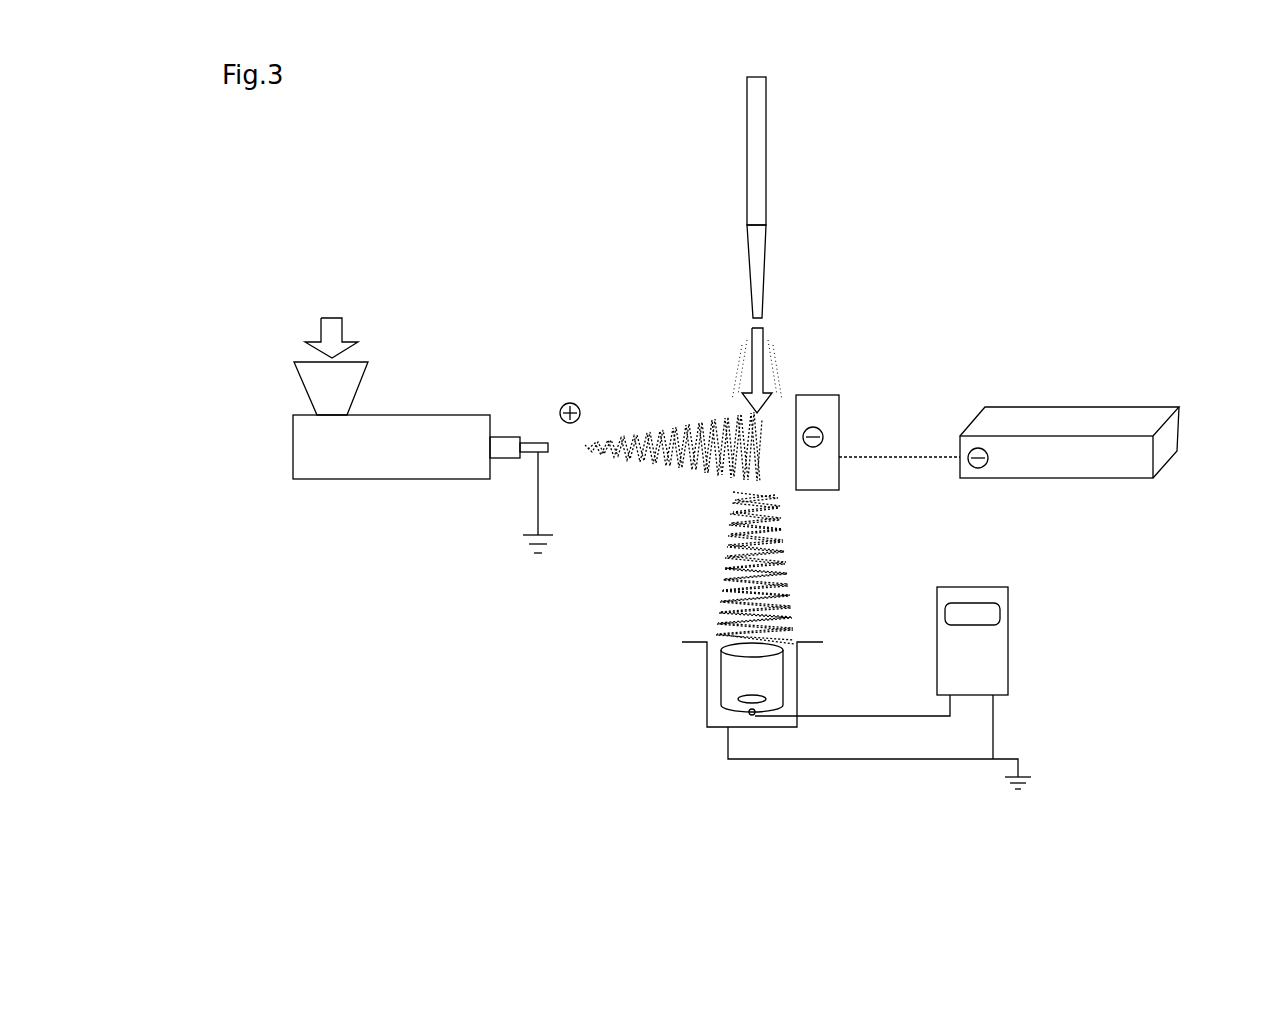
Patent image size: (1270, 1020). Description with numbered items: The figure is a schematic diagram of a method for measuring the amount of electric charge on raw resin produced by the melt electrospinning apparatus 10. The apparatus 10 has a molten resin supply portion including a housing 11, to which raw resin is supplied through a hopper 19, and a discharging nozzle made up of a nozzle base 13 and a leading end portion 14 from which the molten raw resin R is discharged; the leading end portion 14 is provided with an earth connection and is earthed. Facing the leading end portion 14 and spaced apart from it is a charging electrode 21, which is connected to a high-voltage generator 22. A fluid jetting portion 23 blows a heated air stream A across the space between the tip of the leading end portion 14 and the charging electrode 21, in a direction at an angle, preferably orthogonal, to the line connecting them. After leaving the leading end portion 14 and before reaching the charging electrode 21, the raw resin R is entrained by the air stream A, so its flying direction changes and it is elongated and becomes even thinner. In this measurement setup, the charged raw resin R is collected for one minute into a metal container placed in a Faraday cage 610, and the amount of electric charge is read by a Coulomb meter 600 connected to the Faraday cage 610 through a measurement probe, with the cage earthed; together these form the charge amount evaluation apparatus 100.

The melt electrospinning apparatus 10 is at (615, 352).
The housing 11 is at (432, 481).
The nozzle base 13 is at (506, 460).
The leading end portion 14 is at (538, 437).
The hopper 19 is at (300, 391).
The charging electrode 21 is at (840, 424).
The high-voltage generator 22 is at (1047, 418).
The fluid jetting portion 23 is at (767, 138).
The air stream A is at (770, 350).
The raw resin R is at (640, 480).
The charge amount evaluation apparatus 100 is at (1028, 640).
The Coulomb meter 600 is at (1010, 672).
The Faraday cage 610 is at (702, 704).